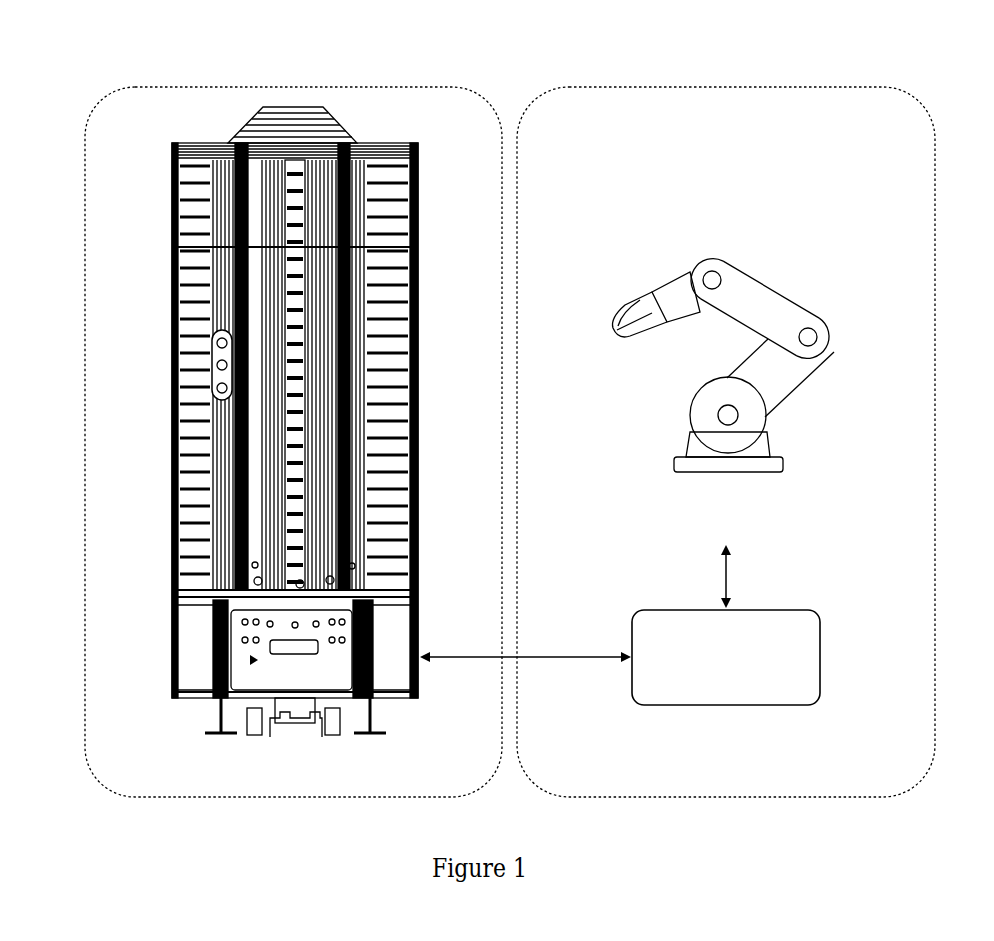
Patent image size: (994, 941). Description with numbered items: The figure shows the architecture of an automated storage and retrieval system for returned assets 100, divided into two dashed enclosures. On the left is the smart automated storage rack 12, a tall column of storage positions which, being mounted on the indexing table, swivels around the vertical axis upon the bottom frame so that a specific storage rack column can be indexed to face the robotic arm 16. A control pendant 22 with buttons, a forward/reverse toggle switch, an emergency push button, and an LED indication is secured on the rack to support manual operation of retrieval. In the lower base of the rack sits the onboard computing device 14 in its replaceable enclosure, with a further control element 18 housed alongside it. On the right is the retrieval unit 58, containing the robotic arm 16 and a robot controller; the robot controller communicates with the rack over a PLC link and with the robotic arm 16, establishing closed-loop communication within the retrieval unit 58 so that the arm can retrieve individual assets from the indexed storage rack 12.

The automated storage and retrieval system for returned assets 100 is at (436, 64).
The retrieval unit 58 is at (812, 92).
The storage rack 12 is at (172, 194).
The control pendant 22 is at (172, 364).
The onboard computing device 14 is at (172, 627).
The programmable logic controller 18 is at (172, 657).
The robotic arm 16 is at (724, 385).